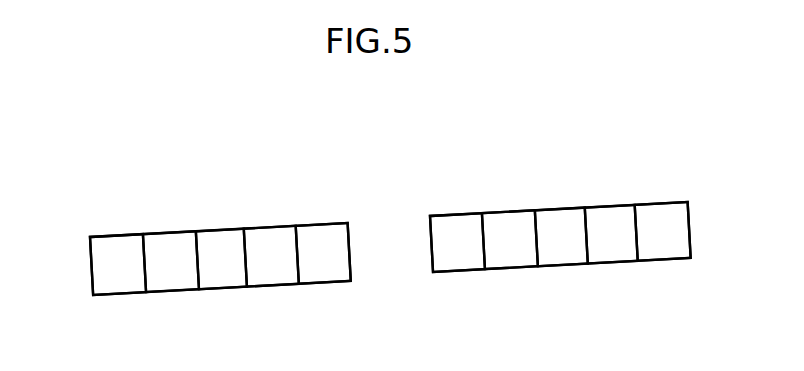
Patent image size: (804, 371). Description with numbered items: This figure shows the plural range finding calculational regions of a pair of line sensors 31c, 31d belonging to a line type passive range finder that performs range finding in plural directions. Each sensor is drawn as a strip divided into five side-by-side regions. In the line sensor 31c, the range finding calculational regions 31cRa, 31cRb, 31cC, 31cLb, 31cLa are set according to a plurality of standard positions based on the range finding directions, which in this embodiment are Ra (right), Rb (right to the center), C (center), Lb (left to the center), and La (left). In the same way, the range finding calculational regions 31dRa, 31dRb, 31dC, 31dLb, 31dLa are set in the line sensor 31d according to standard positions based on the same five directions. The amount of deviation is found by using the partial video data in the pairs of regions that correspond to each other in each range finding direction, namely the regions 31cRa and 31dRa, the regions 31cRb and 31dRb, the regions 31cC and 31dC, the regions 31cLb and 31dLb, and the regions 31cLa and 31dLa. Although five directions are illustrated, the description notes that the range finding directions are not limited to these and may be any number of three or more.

The line sensor 31c is at (90, 265).
The range finding calculational region 31cRa is at (120, 295).
The range finding calculational region 31cRb is at (167, 232).
The range finding calculational region 31cC is at (213, 290).
The range finding calculational region 31cLb is at (267, 227).
The range finding calculational region 31cLa is at (320, 282).
The line sensor 31d is at (690, 230).
The range finding calculational region 31dRa is at (462, 273).
The range finding calculational region 31dRb is at (497, 210).
The range finding calculational region 31dC is at (558, 268).
The range finding calculational region 31dLb is at (605, 206).
The range finding calculational region 31dLa is at (660, 260).